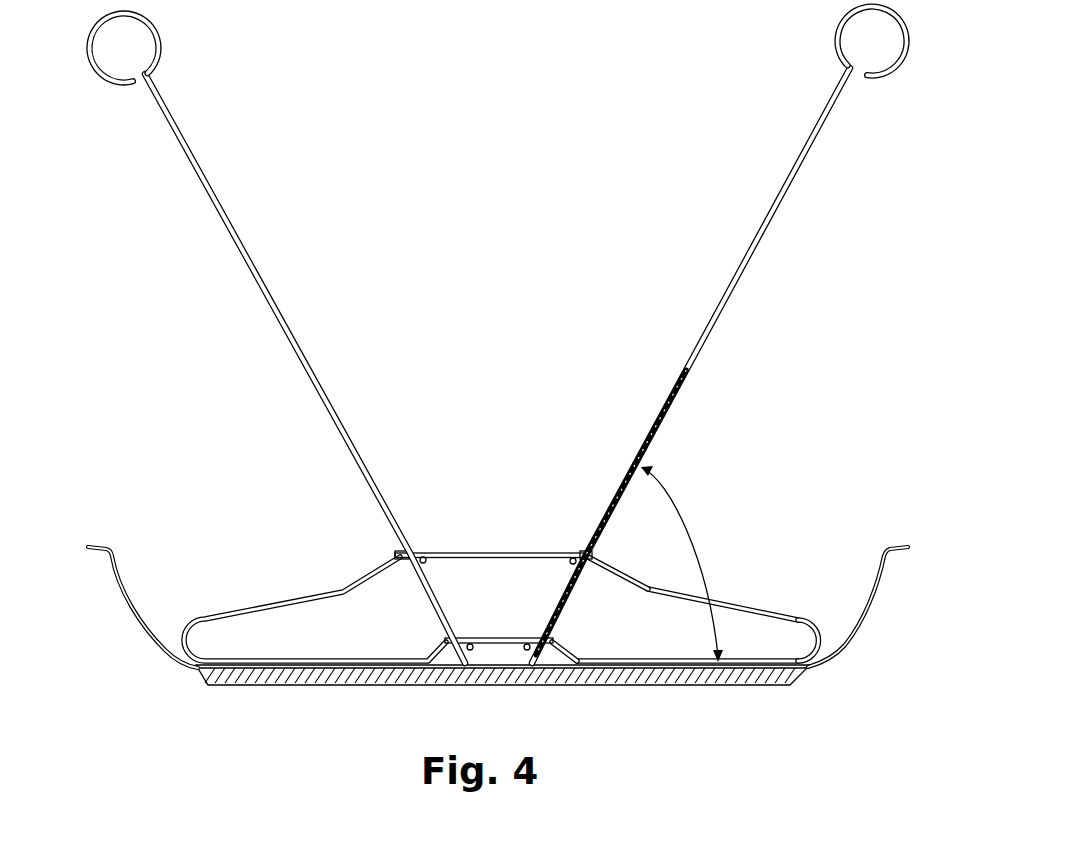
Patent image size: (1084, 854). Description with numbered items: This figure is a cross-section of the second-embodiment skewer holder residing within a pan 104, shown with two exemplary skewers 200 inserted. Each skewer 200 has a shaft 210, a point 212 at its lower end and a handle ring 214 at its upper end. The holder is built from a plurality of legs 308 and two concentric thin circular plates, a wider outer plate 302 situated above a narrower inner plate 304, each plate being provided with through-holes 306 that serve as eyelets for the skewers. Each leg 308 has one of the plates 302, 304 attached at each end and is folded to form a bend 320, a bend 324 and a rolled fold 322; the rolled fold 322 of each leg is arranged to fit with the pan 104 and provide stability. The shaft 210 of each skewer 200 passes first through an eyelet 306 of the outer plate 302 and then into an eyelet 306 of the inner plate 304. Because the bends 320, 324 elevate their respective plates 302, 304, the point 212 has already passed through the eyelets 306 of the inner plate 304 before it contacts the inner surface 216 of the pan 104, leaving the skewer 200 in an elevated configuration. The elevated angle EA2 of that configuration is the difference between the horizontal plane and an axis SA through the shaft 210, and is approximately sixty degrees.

The pan 104 is at (111, 540).
The skewer 200 is at (502, 335).
The shaft 210 is at (274, 302).
The point 212 is at (540, 665).
The handle ring 214 is at (153, 73).
The inner surface of the pan 216 is at (755, 665).
The outer plate 302 is at (447, 552).
The inner plate 304 is at (500, 638).
The through-holes 306 is at (415, 552).
The legs 308 is at (280, 603).
The bend 320 is at (650, 590).
The rolled fold 322 is at (807, 628).
The bend 324 is at (570, 652).
The shaft axis SA is at (655, 430).
The elevated angle EA2 is at (705, 532).